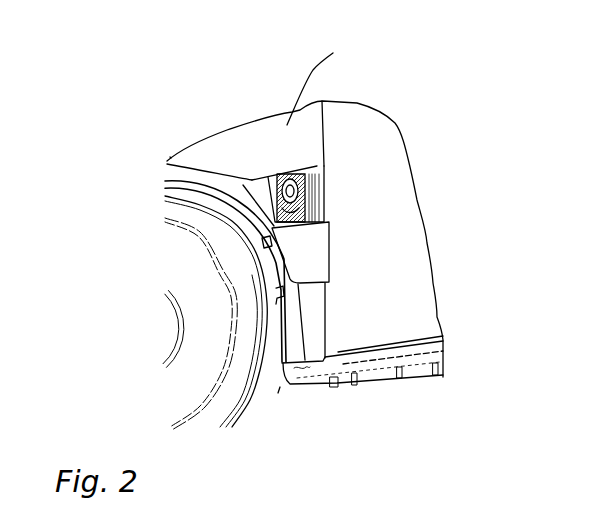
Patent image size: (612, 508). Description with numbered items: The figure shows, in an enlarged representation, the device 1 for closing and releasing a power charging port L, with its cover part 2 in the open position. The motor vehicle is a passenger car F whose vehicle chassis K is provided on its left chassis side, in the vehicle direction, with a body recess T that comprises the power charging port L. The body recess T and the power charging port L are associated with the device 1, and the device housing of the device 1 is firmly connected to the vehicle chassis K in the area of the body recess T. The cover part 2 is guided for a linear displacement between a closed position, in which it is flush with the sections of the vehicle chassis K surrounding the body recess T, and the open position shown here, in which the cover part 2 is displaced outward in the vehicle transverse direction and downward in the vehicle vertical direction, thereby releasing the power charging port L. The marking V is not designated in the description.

The vehicle V is at (131, 79).
The passenger car F is at (433, 60).
The body recess T is at (288, 170).
The vehicle chassis K is at (360, 115).
The power charging port L is at (295, 195).
The device 1 is at (337, 197).
The cover part 2 is at (320, 255).